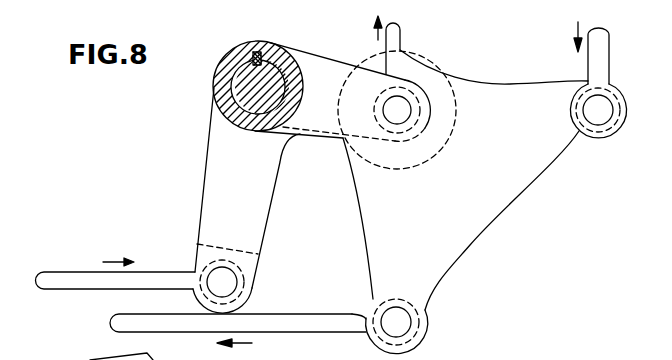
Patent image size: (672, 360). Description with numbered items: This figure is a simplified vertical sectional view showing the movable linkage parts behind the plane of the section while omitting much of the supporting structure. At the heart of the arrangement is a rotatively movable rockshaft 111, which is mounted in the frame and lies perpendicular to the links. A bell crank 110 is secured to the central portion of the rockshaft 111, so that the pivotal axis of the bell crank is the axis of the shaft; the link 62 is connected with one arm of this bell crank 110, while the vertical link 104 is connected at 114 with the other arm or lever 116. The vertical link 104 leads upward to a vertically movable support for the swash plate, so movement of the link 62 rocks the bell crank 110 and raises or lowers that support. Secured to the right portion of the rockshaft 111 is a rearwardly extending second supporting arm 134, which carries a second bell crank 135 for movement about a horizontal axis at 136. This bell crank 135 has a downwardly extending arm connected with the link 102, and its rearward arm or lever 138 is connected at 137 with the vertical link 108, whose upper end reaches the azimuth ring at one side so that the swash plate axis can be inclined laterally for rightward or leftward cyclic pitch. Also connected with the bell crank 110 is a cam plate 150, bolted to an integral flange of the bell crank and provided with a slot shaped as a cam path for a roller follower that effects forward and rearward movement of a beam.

The link 62 is at (80, 271).
The link 102 is at (323, 323).
The vertical link 104 is at (402, 45).
The vertical link 108 is at (600, 52).
The bell crank 110 is at (201, 196).
The rockshaft 111 is at (246, 62).
The connection 114 is at (405, 113).
The lever 116 is at (313, 75).
The second supporting arm 134 is at (363, 28).
The bell crank 135 is at (373, 207).
The horizontal axis 136 is at (453, 127).
The connection 137 is at (600, 117).
The lever 138 is at (487, 88).
The cam plate 150 is at (73, 359).